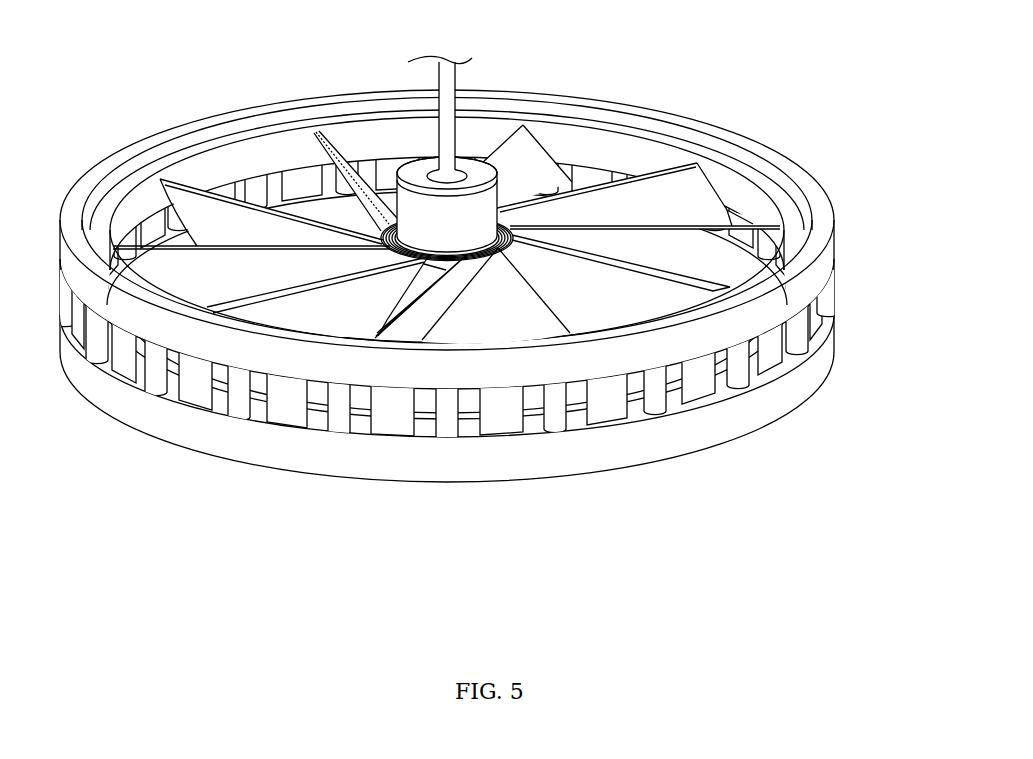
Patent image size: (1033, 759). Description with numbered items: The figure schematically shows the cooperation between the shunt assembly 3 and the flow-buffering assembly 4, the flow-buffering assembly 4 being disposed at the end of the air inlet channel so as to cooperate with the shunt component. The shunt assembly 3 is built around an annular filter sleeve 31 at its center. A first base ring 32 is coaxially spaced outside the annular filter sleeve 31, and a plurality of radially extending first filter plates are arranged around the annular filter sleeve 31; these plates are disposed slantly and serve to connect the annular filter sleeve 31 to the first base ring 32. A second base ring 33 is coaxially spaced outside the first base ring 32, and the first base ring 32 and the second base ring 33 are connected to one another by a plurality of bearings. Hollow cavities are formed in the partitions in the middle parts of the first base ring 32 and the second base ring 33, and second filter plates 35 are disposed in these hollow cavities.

The shunt assembly 3 is at (776, 114).
The flow-buffering assembly 4 is at (415, 170).
The annular filter sleeve 31 is at (508, 223).
The first base ring 32 is at (790, 232).
The second base ring 33 is at (795, 268).
The second filter plates 35 is at (387, 418).